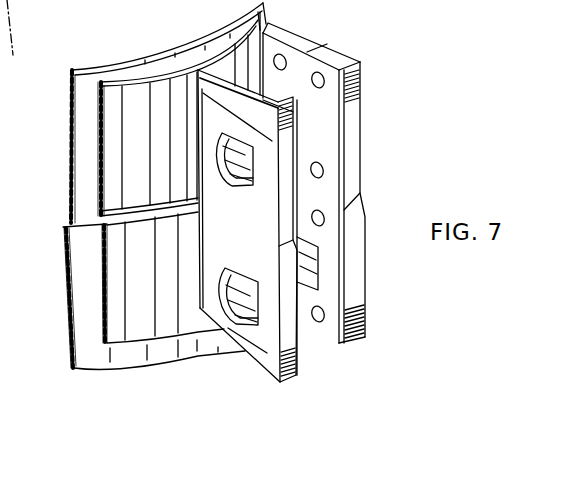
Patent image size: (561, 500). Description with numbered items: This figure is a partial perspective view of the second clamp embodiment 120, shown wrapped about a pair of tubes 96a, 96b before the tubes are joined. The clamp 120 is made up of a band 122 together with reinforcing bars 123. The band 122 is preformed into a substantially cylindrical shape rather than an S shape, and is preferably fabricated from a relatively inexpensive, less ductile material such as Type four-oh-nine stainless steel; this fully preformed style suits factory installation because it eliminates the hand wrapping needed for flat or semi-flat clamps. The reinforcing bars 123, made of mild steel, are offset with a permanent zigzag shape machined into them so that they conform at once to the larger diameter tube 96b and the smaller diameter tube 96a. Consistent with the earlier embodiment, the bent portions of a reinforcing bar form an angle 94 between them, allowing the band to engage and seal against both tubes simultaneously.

The angle 94 is at (12, 27).
The smaller diameter tube 96a is at (87, 78).
The larger diameter tube 96b is at (103, 315).
The band 122 is at (117, 143).
The second clamp embodiment 120 is at (362, 151).
The reinforcing bars 123 is at (358, 100).